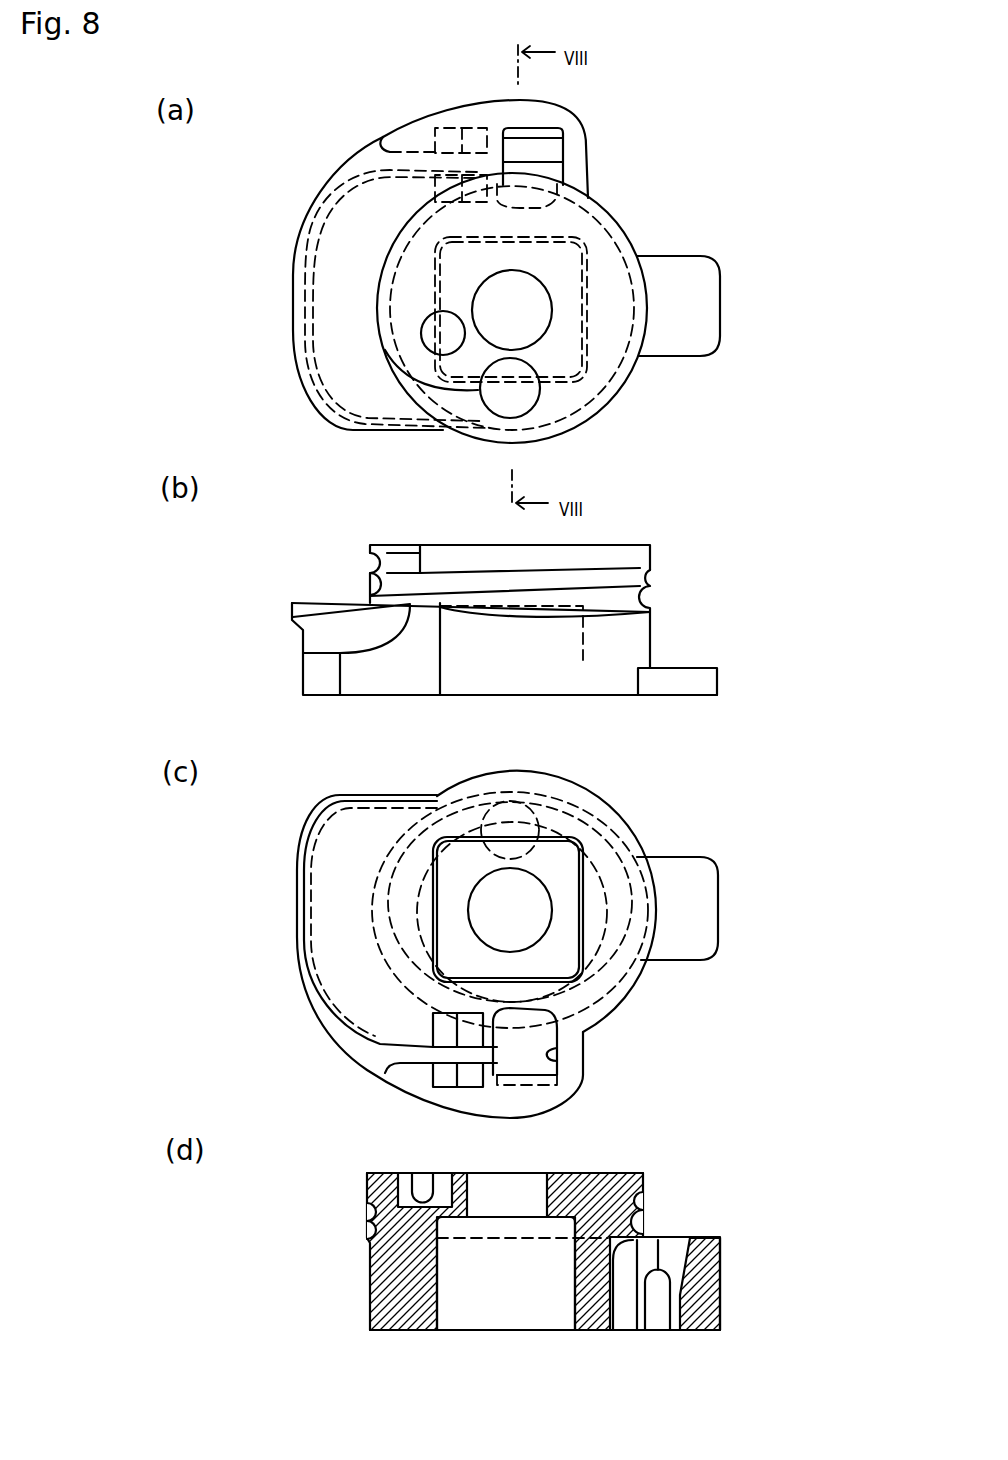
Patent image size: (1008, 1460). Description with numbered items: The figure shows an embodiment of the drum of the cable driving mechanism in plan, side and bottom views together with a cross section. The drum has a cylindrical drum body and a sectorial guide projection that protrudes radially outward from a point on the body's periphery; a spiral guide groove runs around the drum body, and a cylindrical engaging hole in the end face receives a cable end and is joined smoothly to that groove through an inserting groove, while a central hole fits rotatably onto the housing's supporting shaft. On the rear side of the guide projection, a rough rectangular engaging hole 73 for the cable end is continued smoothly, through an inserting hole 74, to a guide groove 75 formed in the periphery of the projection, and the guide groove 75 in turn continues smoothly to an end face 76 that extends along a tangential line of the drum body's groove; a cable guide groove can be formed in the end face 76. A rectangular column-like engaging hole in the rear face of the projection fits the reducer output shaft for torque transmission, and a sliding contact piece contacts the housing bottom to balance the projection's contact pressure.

The engaging hole 73 is at (552, 1055).
The inserting hole 74 is at (410, 1058).
The guide groove 75 is at (318, 1008).
The end face 76 is at (415, 792).